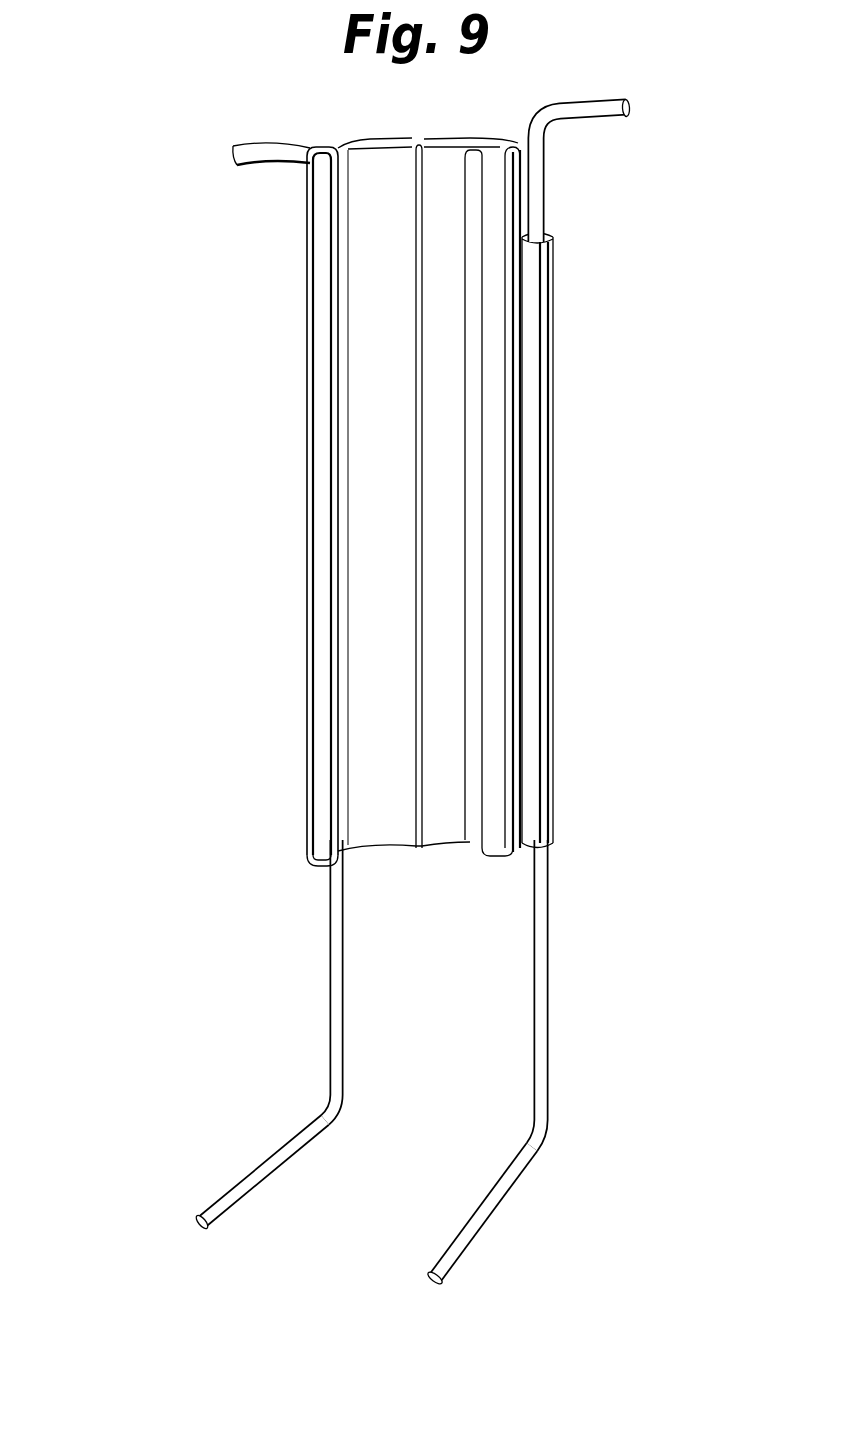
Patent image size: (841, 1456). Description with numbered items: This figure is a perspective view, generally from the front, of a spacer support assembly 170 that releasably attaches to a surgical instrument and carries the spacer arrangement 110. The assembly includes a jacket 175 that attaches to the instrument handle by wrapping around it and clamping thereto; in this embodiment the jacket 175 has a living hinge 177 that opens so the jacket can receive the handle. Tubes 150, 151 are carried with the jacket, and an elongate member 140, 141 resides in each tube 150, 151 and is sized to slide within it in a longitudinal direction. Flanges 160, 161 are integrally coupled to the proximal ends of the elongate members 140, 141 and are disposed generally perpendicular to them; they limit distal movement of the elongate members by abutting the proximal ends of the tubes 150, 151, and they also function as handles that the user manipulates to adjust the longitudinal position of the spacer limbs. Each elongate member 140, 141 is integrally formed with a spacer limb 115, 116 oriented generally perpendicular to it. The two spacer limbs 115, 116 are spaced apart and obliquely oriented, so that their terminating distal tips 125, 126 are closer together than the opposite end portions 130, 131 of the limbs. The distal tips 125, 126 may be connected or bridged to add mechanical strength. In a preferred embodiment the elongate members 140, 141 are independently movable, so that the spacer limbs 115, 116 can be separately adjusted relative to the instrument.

The spacer arrangement 110 is at (375, 1083).
The spacer limb 115 is at (538, 1140).
The spacer limb 116 is at (252, 1176).
The distal tip 125 is at (435, 1283).
The distal tip 126 is at (200, 1222).
The end portion 130 is at (550, 1126).
The end portion 131 is at (340, 1115).
The elongate member 140 is at (552, 903).
The elongate member 141 is at (330, 903).
The tube 150 is at (306, 622).
The tube 151 is at (555, 418).
The flange 160 is at (598, 116).
The flange 161 is at (240, 167).
The spacer support assembly 170 is at (413, 472).
The jacket 175 is at (491, 359).
The living hinge 177 is at (418, 168).